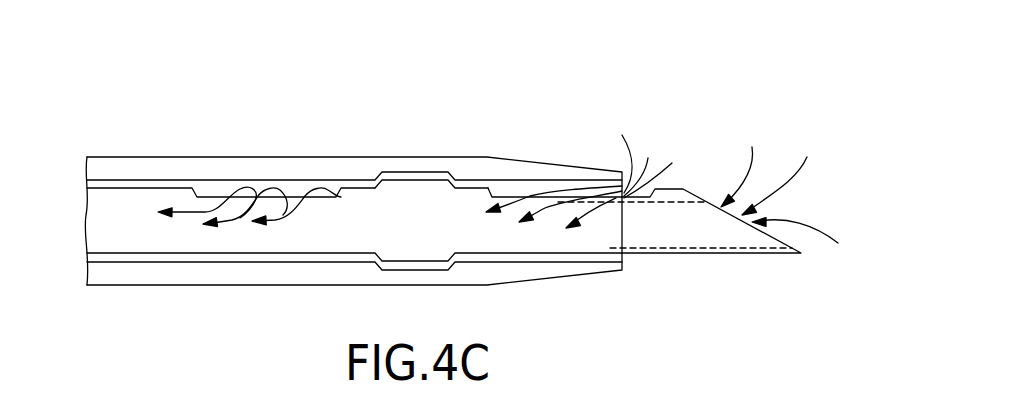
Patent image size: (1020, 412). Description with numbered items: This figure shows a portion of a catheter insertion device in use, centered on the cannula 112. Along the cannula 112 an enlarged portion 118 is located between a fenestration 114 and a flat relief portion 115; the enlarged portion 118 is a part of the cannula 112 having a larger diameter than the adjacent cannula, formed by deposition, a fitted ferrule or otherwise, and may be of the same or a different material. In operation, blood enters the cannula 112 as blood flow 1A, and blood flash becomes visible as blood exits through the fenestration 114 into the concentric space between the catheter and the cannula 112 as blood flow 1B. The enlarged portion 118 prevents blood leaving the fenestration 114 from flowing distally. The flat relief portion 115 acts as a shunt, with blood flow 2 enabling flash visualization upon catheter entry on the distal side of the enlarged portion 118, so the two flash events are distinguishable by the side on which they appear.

The blood flow through shunt 2 is at (553, 200).
The cannula 112 is at (697, 225).
The fenestration 114 is at (298, 197).
The flat relief portion 115 is at (512, 196).
The enlarged portion 118 is at (410, 197).
The blood flow entering cannula 1A is at (774, 158).
The blood flow exiting fenestration 1B is at (240, 220).